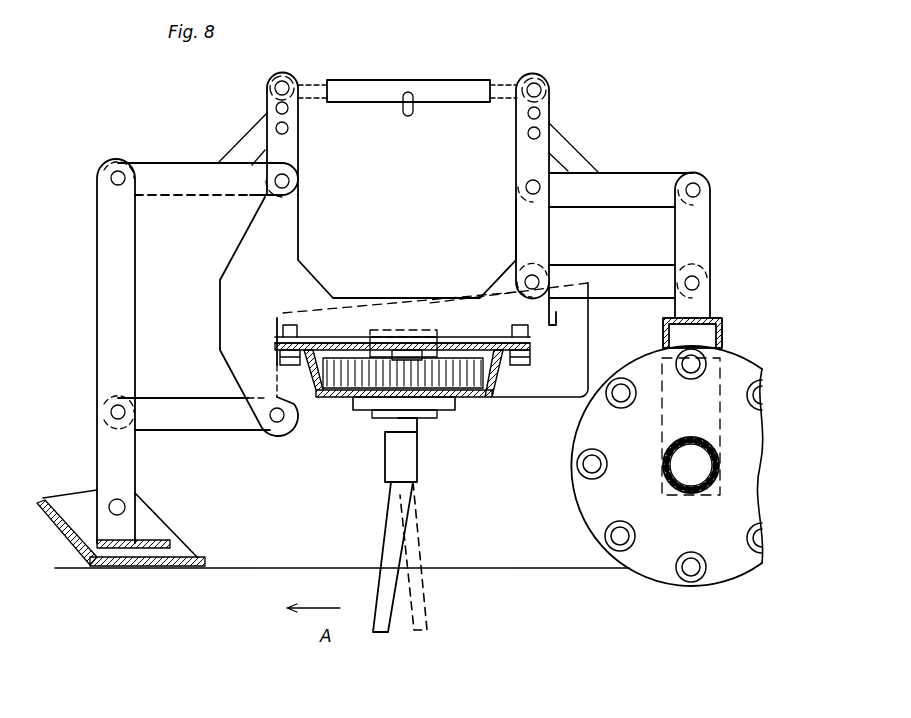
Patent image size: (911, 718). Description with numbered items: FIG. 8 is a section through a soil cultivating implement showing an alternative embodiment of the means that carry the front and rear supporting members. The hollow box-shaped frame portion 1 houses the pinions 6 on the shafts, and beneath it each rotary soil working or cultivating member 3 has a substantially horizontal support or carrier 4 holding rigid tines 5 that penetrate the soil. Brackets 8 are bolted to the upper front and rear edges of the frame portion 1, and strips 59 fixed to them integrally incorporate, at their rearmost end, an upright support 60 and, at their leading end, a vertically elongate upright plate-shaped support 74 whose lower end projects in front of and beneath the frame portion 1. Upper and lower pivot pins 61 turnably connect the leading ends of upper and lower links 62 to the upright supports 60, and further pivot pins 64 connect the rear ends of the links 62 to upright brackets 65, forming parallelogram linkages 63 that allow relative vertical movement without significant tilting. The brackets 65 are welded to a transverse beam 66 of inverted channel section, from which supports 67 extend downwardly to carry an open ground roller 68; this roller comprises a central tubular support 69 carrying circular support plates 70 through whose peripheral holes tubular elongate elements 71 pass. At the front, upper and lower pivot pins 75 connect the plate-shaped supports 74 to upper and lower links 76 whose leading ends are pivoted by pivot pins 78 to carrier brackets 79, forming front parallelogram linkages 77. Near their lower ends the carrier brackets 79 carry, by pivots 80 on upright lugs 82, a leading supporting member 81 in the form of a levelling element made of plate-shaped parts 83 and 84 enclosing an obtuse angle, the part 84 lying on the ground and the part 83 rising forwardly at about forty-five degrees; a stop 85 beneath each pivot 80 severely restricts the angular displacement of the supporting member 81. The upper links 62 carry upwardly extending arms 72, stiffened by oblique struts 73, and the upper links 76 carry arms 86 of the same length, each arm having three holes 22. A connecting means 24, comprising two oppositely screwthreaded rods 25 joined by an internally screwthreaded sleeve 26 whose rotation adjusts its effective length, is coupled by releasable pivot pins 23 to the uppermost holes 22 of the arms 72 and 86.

The hollow box-shaped frame portion 1 is at (335, 398).
The rotary soil working or cultivating member 3 is at (379, 513).
The support or carrier 4 is at (417, 455).
The rigid tines 5 is at (420, 560).
The pinion 6 is at (465, 398).
The brackets 8 is at (275, 333).
The holes 22 is at (291, 112).
The releasable pivot pin 23 is at (289, 80).
The connecting means 24 is at (432, 82).
The screwthreaded rods 25 is at (325, 98).
The internally screwthreaded sleeve 26 is at (415, 103).
The strips 59 is at (322, 293).
The upright support 60 is at (549, 237).
The upper and lower pivot pins 61 is at (526, 270).
The upper and lower links 62 is at (640, 172).
The parallelogram linkages 63 is at (652, 244).
The upper and lower pivot pins 64 is at (700, 185).
The upright brackets 65 is at (710, 228).
The transverse beam 66 is at (716, 318).
The supports 67 is at (722, 345).
The open ground roller 68 is at (652, 346).
The central tubular support 69 is at (663, 465).
The support plates 70 is at (575, 505).
The elongate elements 71 is at (668, 547).
The upwardly extending arms 72 is at (518, 160).
The oblique struts 73 is at (588, 165).
The upright plate-shaped support 74 is at (244, 238).
The upper and lower pivot pins 75 is at (300, 181).
The upper and lower links 76 is at (196, 166).
The front parallelogram linkages 77 is at (205, 296).
The upper and lower pivot pins 78 is at (112, 178).
The carrier brackets 79 is at (98, 292).
The pivots 80 is at (122, 490).
The leading supporting member 81 is at (67, 493).
The upright lugs 82 is at (145, 505).
The plate-shaped part 83 is at (65, 535).
The plate-shaped part 84 is at (138, 567).
The stop 85 is at (172, 548).
The upwardly extending arms 86 is at (266, 105).